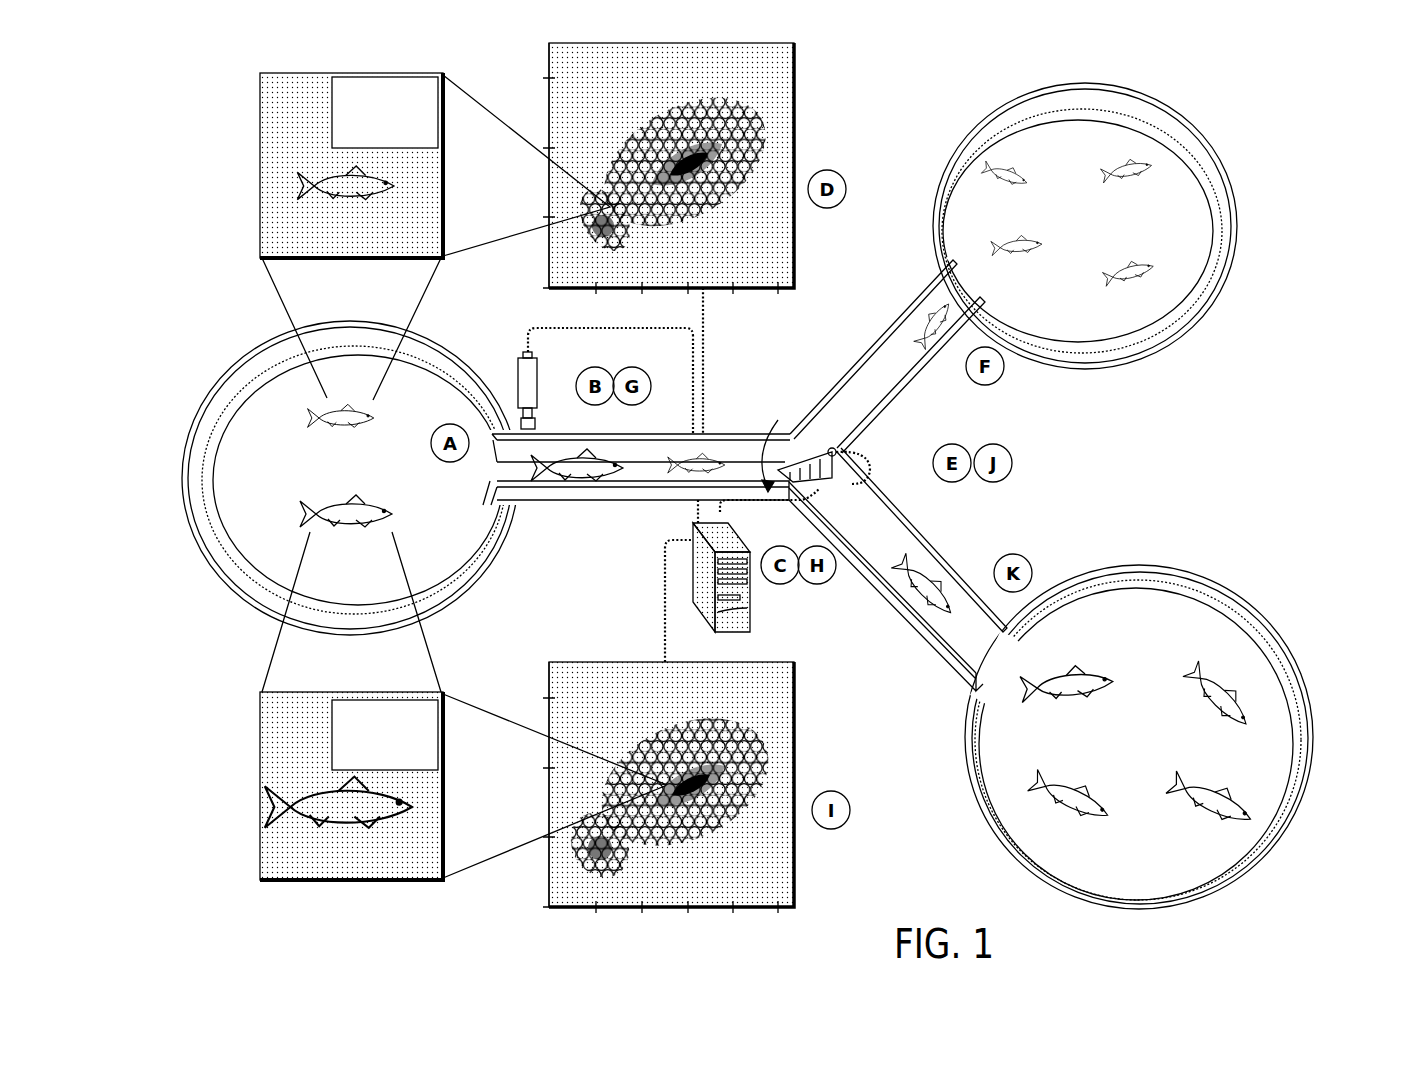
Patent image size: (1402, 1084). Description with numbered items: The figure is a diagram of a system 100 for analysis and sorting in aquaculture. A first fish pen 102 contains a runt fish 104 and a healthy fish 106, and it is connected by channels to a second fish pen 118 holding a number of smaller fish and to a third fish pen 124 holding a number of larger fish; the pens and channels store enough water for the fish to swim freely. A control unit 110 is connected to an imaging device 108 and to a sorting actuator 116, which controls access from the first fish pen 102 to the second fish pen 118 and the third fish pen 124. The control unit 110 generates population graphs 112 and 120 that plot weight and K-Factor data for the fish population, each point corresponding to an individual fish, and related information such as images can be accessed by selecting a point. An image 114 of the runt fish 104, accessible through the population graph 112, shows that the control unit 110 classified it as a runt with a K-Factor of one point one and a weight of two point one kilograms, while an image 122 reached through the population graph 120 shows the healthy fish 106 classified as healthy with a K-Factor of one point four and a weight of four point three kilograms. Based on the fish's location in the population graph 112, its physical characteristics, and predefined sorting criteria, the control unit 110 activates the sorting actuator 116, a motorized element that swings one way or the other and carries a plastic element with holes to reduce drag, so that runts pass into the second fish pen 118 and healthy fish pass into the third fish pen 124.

The system 100 is at (145, 119).
The first fish pen 102 is at (187, 468).
The runt fish 104 is at (326, 420).
The healthy fish 106 is at (306, 515).
The imaging device 108 is at (525, 362).
The control unit 110 is at (752, 598).
The population graph 112 is at (795, 73).
The image 114 is at (260, 150).
The sorting actuator 116 is at (842, 462).
The second fish pen 118 is at (1228, 228).
The population graph 120 is at (795, 692).
The image 122 is at (260, 772).
The third fish pen 124 is at (1307, 774).